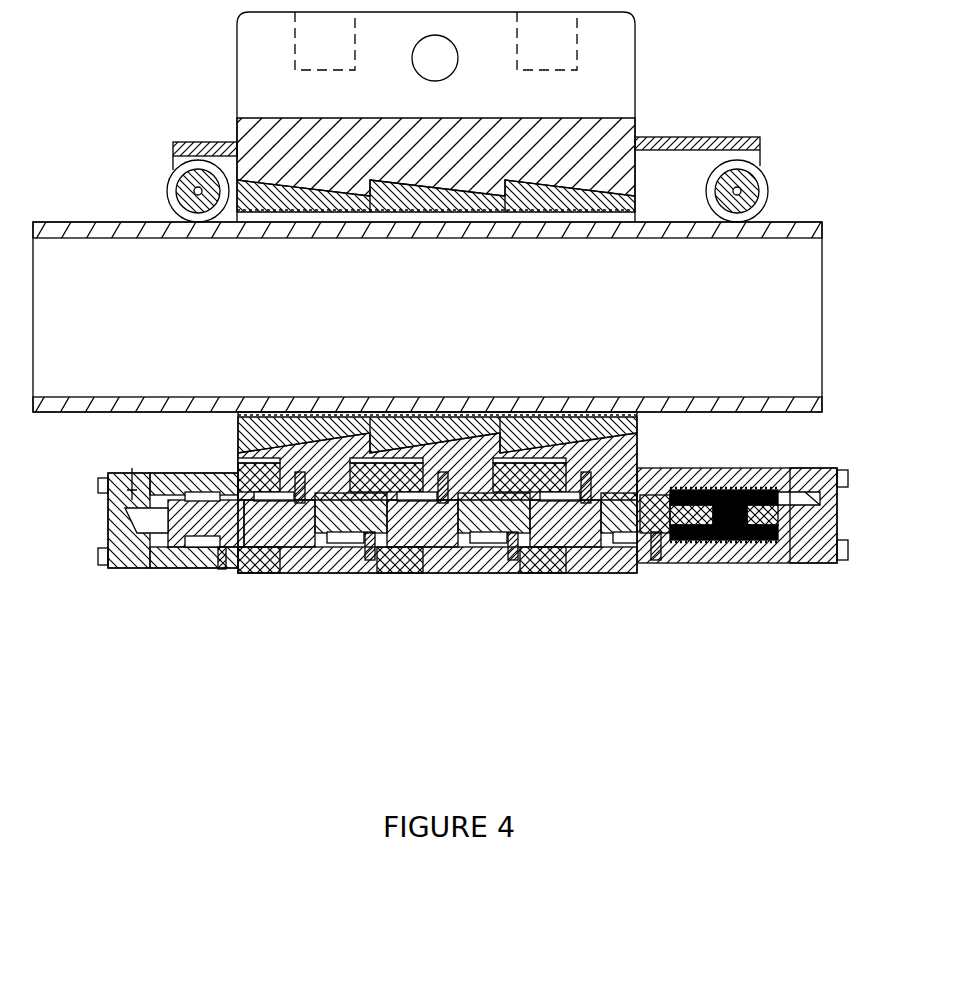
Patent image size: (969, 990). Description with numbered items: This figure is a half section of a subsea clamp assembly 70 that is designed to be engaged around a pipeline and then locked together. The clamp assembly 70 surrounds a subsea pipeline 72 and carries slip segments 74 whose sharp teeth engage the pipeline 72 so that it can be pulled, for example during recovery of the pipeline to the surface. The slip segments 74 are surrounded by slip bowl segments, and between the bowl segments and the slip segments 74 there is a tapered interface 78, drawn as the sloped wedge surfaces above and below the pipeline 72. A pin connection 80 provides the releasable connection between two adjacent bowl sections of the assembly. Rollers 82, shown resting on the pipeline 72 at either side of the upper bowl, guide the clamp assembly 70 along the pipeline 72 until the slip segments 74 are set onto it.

The clamp assembly 70 is at (473, 502).
The subsea pipeline 72 is at (330, 400).
The slip segments 74 is at (443, 432).
The tapered interface 78 is at (490, 438).
The pin connection 80 is at (455, 570).
The rollers 82 is at (768, 193).